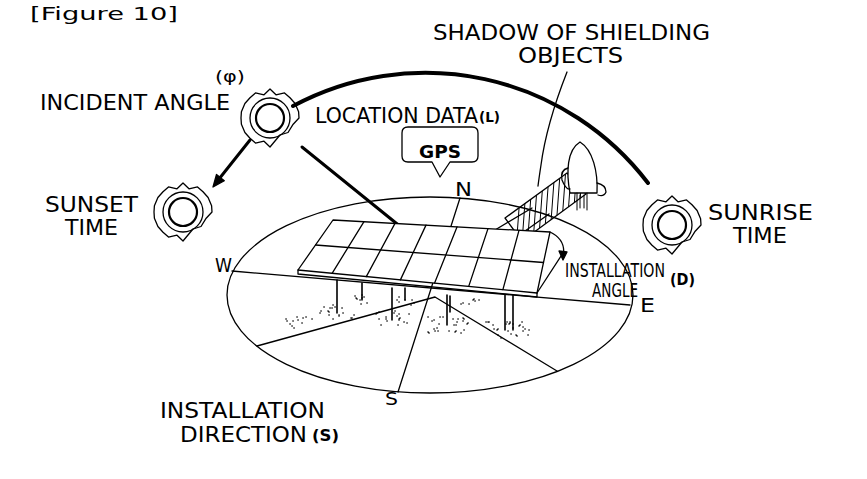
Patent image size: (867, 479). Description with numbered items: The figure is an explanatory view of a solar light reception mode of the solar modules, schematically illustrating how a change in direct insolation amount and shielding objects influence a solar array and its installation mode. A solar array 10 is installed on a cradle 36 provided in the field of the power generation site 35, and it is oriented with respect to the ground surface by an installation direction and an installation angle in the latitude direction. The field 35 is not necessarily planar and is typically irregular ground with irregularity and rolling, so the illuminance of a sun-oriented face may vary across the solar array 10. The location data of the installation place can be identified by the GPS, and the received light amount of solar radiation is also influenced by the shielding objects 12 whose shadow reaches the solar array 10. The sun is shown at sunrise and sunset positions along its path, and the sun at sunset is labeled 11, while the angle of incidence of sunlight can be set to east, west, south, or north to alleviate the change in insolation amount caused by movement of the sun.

The solar array 10 is at (308, 252).
The sun 11 is at (174, 186).
The shielding objects 12 is at (598, 176).
The power generation site field 35 is at (475, 368).
The cradle 36 is at (441, 323).